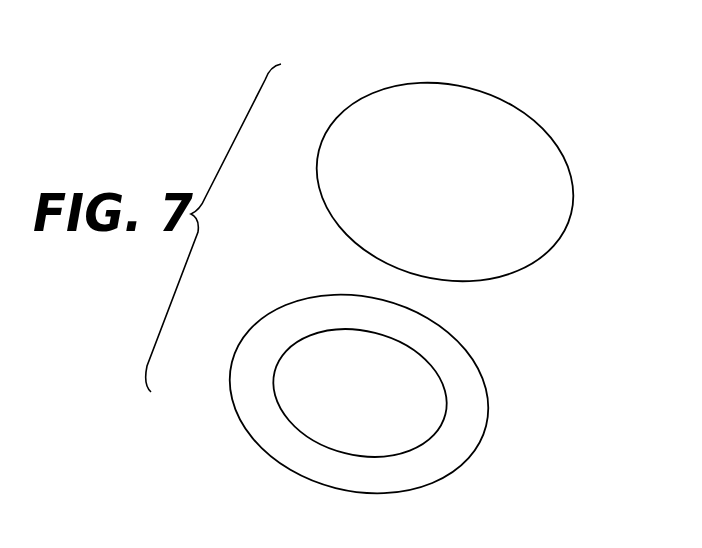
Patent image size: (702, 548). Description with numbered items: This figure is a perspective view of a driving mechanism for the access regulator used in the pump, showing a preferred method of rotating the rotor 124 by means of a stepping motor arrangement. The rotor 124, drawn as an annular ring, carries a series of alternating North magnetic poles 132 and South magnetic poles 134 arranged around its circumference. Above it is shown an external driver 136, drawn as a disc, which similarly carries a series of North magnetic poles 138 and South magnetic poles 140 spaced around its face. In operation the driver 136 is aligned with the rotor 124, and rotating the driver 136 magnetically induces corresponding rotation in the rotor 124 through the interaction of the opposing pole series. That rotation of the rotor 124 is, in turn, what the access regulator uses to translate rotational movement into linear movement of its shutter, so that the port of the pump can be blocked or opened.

The rotor 124 is at (483, 412).
The North magnetic poles 132 is at (267, 325).
The South magnetic poles 134 is at (432, 326).
The external driver 136 is at (578, 247).
The North magnetic poles 138 is at (357, 118).
The South magnetic poles 140 is at (508, 117).